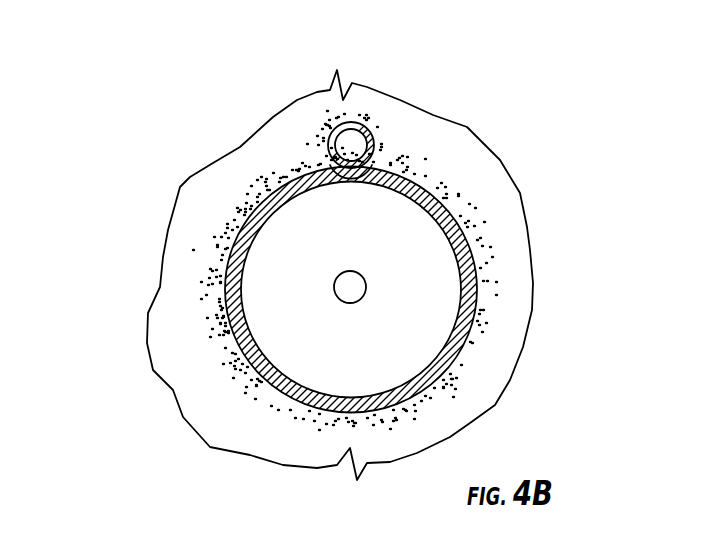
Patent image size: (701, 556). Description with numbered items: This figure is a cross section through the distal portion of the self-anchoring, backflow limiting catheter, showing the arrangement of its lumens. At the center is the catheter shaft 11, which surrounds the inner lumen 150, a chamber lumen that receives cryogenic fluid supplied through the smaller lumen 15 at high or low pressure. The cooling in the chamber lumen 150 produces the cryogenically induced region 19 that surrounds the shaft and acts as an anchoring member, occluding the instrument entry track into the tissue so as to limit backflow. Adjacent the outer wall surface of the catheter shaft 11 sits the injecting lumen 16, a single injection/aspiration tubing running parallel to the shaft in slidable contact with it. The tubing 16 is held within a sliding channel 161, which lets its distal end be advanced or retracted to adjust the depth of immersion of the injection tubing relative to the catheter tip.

The catheter shaft 11 is at (423, 165).
The lumen 15 is at (346, 292).
The injecting lumen 16 is at (352, 142).
The sliding channel 161 is at (380, 153).
The cryogenically induced region 19 is at (227, 367).
The inner lumen 150 is at (378, 363).